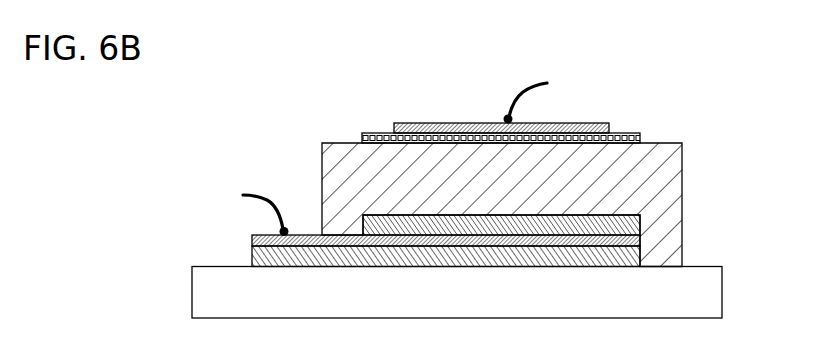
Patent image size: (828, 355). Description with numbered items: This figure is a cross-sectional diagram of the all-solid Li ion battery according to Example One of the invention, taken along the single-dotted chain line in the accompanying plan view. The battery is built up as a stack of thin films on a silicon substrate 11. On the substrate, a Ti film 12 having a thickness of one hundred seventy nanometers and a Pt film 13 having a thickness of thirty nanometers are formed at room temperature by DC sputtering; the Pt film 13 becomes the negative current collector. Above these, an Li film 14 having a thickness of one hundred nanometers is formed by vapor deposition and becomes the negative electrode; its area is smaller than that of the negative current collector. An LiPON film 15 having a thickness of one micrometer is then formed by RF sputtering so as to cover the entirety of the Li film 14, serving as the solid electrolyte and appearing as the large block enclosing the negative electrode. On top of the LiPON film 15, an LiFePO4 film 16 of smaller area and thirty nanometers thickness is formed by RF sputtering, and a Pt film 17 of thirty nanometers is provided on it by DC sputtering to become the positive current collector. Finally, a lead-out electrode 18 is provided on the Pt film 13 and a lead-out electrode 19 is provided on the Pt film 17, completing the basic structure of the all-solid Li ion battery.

The silicon substrate 11 is at (713, 299).
The Ti film 12 is at (640, 255).
The Pt film 13 is at (640, 237).
The Li film 14 is at (640, 218).
The LiPON film 15 is at (670, 173).
The LiFePO4 film 16 is at (642, 136).
The Pt film 17 is at (610, 128).
The lead-out electrode 18 is at (263, 198).
The lead-out electrode 19 is at (523, 85).